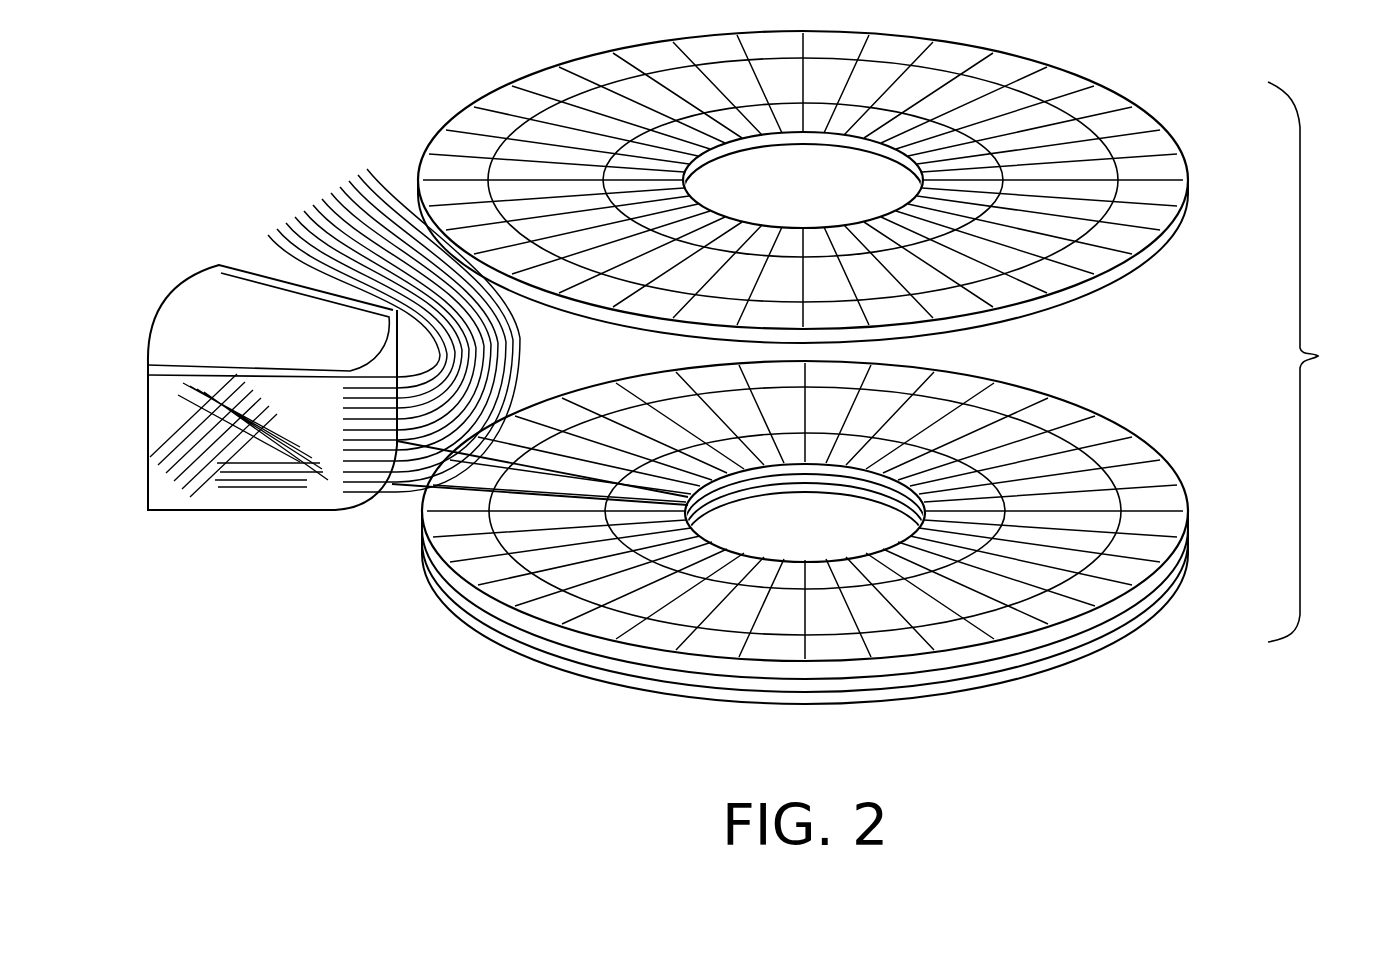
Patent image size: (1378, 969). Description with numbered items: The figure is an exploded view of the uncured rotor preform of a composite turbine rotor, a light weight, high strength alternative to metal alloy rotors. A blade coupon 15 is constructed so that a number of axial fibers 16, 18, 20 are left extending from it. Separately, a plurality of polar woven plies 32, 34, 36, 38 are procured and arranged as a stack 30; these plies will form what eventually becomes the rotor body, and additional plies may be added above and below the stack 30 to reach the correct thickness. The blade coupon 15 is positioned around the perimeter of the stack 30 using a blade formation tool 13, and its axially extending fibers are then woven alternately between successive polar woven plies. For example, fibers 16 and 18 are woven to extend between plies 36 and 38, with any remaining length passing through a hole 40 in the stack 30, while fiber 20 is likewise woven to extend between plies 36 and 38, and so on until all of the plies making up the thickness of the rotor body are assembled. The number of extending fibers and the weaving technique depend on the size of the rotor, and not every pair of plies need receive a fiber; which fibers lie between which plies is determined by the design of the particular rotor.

The blade formation tool 13 is at (270, 345).
The blade coupon 15 is at (195, 523).
The axial fiber 16 is at (551, 449).
The axial fiber 18 is at (423, 557).
The axial fiber 20 is at (522, 347).
The stack 30 is at (1316, 362).
The polar woven ply 32 is at (1190, 590).
The polar woven ply 34 is at (1192, 547).
The polar woven ply 36 is at (1192, 506).
The polar woven ply 38 is at (1185, 150).
The hole 40 is at (865, 541).